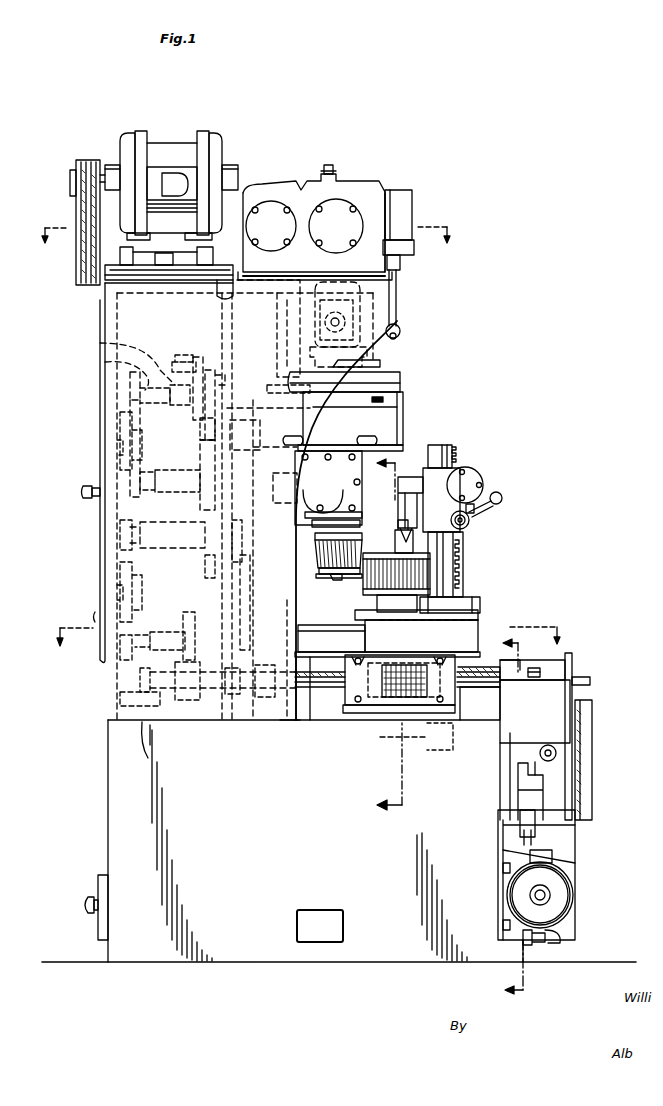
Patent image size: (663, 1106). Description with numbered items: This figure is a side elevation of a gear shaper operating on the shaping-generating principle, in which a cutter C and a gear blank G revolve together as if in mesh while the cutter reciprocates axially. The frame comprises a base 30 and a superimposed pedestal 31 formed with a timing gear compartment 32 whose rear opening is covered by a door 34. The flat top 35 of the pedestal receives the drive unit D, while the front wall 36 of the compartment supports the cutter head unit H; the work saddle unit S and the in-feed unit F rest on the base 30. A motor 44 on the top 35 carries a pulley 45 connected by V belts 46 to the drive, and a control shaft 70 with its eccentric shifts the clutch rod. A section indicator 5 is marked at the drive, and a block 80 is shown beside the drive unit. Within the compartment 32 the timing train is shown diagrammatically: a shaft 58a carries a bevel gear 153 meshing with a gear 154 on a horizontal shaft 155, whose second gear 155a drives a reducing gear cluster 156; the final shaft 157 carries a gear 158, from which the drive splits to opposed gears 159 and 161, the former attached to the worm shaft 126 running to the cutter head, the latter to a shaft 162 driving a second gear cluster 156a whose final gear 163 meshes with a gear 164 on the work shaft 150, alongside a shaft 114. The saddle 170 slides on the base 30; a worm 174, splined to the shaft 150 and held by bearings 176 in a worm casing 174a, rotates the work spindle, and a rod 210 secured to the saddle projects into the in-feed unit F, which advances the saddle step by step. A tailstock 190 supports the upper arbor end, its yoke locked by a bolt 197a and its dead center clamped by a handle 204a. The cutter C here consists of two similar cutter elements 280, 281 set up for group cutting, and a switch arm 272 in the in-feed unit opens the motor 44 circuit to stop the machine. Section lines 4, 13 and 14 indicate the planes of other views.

The motor 44 is at (188, 116).
The pulley 45 is at (76, 190).
The V belts 46 is at (78, 218).
The section line 5- 5 is at (250, 241).
The drive unit D is at (278, 173).
The housing block 80 is at (378, 218).
The flat top 35 is at (396, 275).
The control shaft 70 is at (398, 307).
The timing gear compartment 32 is at (134, 304).
The bevel gear 153 is at (102, 342).
The horizontal shaft 155 is at (110, 362).
The second gear 155a is at (130, 380).
The reducing gear cluster 156 is at (128, 434).
The shaft 58a is at (176, 352).
The gear 154 is at (205, 356).
The gear 159 is at (226, 372).
The worm shaft 126 is at (200, 428).
The gear 158 is at (200, 458).
The final shaft 157 is at (162, 488).
The door 34 is at (95, 500).
The shaft 162 is at (128, 522).
The second gear cluster 156a is at (128, 582).
The gear 161 is at (210, 570).
The final gear 163 is at (197, 610).
The shaft 114 is at (245, 537).
The front wall 36 is at (242, 568).
The work shaft 150 is at (155, 681).
The gear 164 is at (132, 698).
The pedestal 31 is at (127, 712).
The cutter head unit H is at (408, 395).
The cutter element 280 is at (318, 565).
The cutter element 281 is at (322, 586).
The cutter C is at (335, 580).
The section line 14- 14 is at (390, 636).
The gear blank G is at (395, 581).
The tailstock 190 is at (476, 471).
The handle 204a is at (502, 500).
The bolt 197a is at (471, 523).
The work saddle unit S is at (499, 600).
The saddle 170 is at (387, 633).
The bearings 176 is at (370, 703).
The worm 174 is at (387, 700).
The worm casing 174a is at (350, 698).
The rod 210 is at (489, 690).
The section line 13- 13 is at (518, 826).
The section line 4- 4 is at (303, 642).
The in-feed unit F is at (603, 708).
The switch arm 272 is at (555, 770).
The base 30 is at (276, 845).